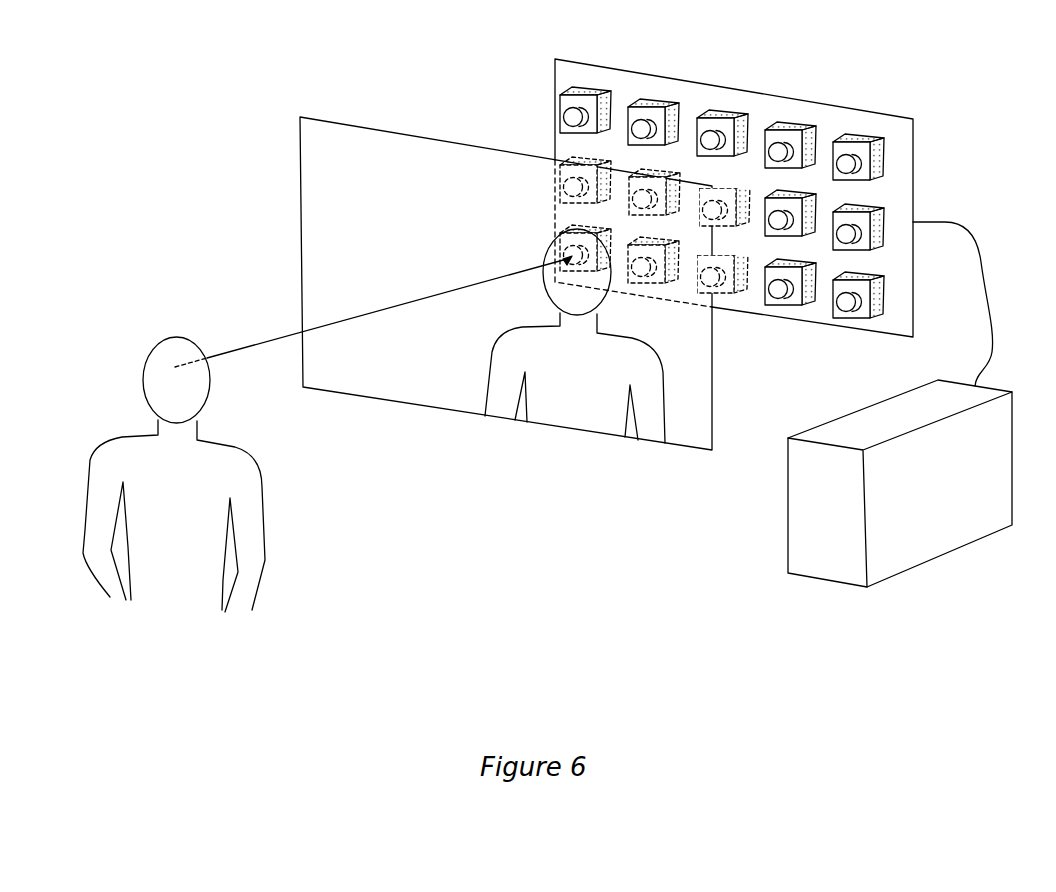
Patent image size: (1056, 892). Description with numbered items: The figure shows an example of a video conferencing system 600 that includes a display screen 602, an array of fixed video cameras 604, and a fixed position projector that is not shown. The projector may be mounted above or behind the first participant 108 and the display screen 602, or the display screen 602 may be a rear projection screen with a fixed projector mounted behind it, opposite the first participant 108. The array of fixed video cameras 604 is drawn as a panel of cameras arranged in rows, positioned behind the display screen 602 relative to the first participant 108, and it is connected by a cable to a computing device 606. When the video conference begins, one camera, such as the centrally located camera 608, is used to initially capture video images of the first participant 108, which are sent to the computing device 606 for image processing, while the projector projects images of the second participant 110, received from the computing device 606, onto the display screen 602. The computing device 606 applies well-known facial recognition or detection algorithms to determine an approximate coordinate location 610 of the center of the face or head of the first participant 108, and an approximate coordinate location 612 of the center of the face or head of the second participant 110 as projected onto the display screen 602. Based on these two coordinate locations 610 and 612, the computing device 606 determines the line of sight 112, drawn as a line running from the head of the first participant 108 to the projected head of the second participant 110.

The video conferencing system 600 is at (198, 73).
The display screen 602 is at (317, 174).
The array of fixed video cameras 604 is at (741, 170).
The computing device 606 is at (951, 539).
The centrally located camera 608 is at (733, 187).
The coordinate location 610 is at (175, 362).
The coordinate location 612 is at (568, 252).
The first participant 108 is at (174, 449).
The second participant 110 is at (601, 402).
The line of sight 112 is at (247, 353).